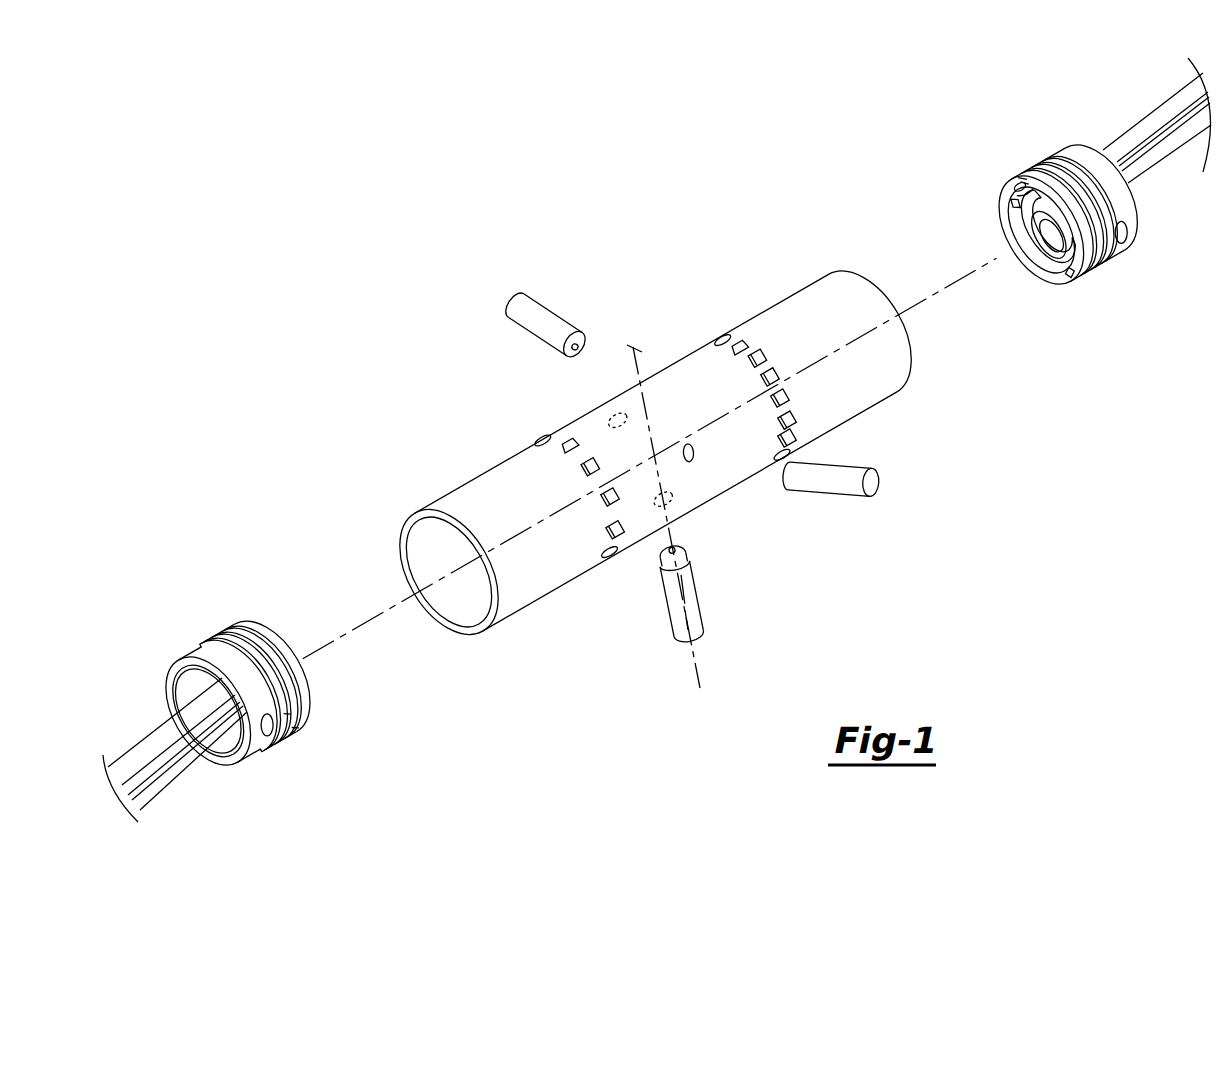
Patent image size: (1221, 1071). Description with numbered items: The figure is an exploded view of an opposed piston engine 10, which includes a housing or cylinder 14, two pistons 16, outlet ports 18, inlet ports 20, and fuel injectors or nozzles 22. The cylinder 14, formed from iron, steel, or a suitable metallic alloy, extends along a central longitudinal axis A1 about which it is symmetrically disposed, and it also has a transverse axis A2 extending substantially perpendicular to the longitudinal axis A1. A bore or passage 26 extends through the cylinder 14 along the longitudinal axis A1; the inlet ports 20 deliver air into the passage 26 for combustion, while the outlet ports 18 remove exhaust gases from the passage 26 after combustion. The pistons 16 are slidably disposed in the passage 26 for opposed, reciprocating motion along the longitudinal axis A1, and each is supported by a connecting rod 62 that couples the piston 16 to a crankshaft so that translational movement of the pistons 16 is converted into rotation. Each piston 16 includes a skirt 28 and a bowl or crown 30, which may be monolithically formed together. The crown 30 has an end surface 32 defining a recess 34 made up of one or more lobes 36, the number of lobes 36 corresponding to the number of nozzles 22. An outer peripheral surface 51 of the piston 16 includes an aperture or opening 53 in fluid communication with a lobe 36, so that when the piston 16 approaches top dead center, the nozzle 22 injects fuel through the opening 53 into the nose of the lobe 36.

The engine 10 is at (294, 441).
The cylinder 14 is at (497, 463).
The piston 16 is at (187, 650).
The outlet ports 18 is at (569, 437).
The inlet ports 20 is at (741, 345).
The fuel injector or nozzle 22 is at (511, 311).
The bore or passage 26 is at (475, 615).
The skirt 28 is at (212, 650).
The bowl or crown 30 is at (268, 628).
The end surface 32 is at (1012, 188).
The recess 34 is at (1032, 238).
The lobe 36 is at (1050, 252).
The outer peripheral surface 51 is at (685, 456).
The aperture or opening 53 is at (303, 703).
The connecting rod 62 is at (138, 757).
The longitudinal axis A1 is at (912, 308).
The transverse axis A2 is at (636, 350).